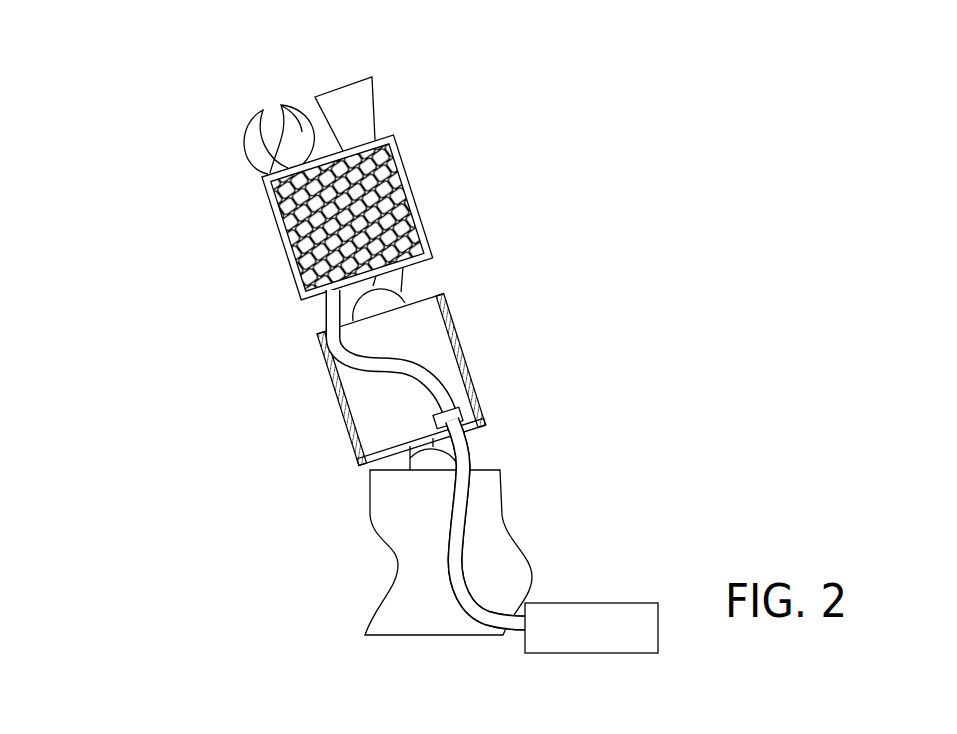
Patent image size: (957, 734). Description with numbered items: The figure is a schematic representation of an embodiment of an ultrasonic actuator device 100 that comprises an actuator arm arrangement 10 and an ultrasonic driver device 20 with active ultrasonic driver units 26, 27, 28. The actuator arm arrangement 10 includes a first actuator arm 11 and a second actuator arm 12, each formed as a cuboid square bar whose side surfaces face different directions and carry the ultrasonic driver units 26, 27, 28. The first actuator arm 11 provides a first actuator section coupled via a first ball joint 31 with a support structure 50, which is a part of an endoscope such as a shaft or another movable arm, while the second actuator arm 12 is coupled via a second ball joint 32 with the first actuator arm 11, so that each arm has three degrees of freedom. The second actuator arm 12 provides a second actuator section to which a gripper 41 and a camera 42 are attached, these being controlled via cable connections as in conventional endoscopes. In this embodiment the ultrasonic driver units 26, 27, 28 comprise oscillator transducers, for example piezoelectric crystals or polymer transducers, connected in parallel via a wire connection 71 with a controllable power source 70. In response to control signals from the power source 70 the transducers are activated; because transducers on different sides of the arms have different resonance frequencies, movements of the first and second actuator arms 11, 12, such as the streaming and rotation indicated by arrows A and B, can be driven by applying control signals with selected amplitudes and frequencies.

The ultrasonic actuator device 100 is at (184, 127).
The actuator arm arrangement 10 is at (530, 120).
The ultrasonic driver device 20 is at (257, 177).
The first actuator arm 11 is at (368, 343).
The second actuator arm 12 is at (407, 187).
The active ultrasonic driver unit 26 is at (392, 158).
The active ultrasonic driver unit 27 is at (342, 399).
The active ultrasonic driver unit 28 is at (461, 361).
The first ball joint 31 is at (425, 465).
The second ball joint 32 is at (388, 300).
The gripper 41 is at (300, 130).
The camera 42 is at (360, 103).
The support structure 50 is at (508, 562).
The controllable power source 70 is at (578, 643).
The wire connection 71 is at (467, 464).